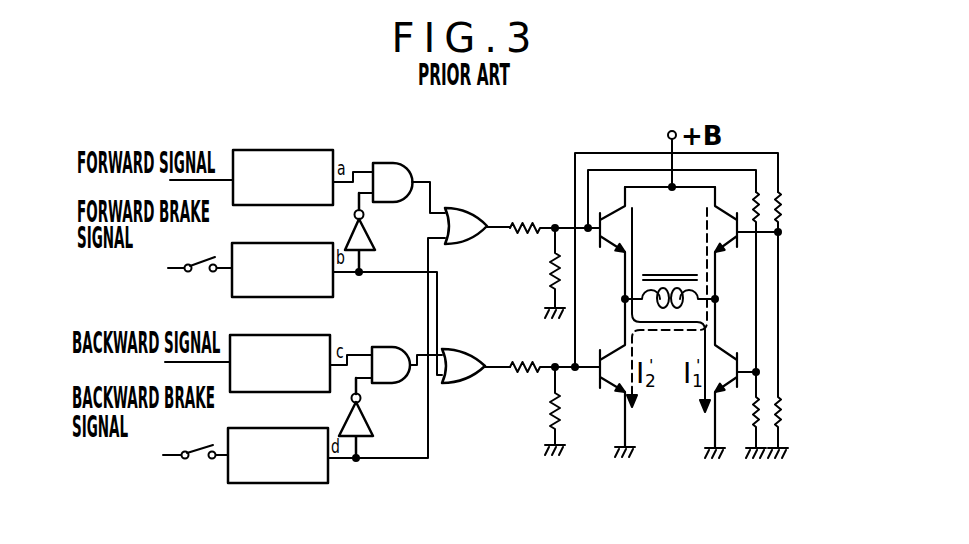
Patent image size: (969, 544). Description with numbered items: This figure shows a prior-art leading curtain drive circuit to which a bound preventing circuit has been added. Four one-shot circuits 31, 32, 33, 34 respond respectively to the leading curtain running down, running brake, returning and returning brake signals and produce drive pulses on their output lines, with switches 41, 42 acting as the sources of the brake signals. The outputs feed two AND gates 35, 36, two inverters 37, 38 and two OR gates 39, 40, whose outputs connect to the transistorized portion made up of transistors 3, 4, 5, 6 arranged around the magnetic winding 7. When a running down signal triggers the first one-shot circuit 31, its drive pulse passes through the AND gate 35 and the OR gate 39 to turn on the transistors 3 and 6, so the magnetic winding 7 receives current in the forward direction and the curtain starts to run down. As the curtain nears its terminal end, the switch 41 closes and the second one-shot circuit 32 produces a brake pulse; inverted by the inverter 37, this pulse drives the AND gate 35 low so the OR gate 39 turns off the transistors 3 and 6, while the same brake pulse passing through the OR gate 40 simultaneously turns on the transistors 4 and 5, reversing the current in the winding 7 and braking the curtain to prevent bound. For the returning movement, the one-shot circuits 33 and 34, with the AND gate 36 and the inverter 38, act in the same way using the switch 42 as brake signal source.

The first one-shot circuit 31 is at (283, 177).
The second one-shot circuit 32 is at (282, 270).
The one-shot circuit 33 is at (280, 363).
The one-shot circuit 34 is at (278, 455).
The AND gate 35 is at (386, 182).
The AND gate 36 is at (383, 365).
The inverter 37 is at (366, 237).
The inverter 38 is at (363, 422).
The OR gate 39 is at (477, 226).
The OR gate 40 is at (476, 366).
The switch 41 is at (203, 273).
The switch 42 is at (200, 459).
The transistor 3 is at (612, 255).
The transistor 4 is at (608, 395).
The transistor 5 is at (732, 255).
The transistor 6 is at (728, 395).
The magnetic winding 7 is at (668, 275).